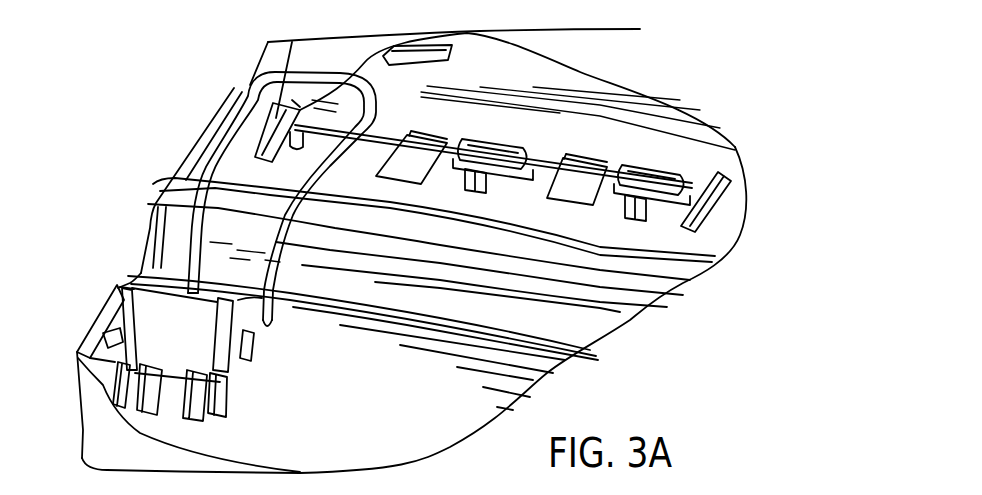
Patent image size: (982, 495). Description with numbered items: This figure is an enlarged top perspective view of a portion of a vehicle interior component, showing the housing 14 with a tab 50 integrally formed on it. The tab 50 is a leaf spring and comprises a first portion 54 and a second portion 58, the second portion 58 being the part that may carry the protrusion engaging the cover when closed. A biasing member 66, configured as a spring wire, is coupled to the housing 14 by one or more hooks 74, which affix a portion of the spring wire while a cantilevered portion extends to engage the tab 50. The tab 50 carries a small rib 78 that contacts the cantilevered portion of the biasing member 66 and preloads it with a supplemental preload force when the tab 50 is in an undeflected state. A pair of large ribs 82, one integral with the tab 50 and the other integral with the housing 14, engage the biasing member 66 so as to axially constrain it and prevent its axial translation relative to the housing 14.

The housing 14 is at (223, 88).
The tab 50 is at (300, 107).
The first portion 54 is at (246, 302).
The second portion 58 is at (247, 173).
The biasing member 66 is at (385, 135).
The hook 74 is at (520, 150).
The small rib 78 is at (640, 29).
The large ribs 82 is at (262, 152).